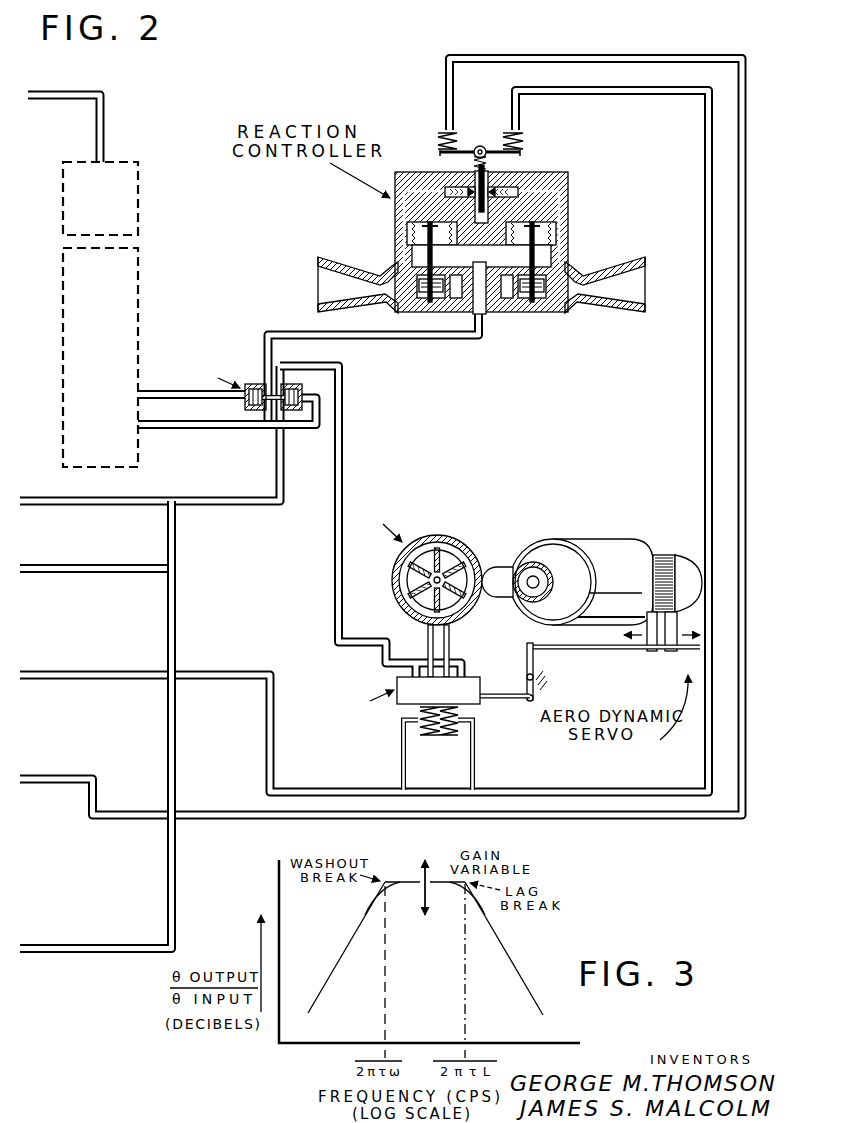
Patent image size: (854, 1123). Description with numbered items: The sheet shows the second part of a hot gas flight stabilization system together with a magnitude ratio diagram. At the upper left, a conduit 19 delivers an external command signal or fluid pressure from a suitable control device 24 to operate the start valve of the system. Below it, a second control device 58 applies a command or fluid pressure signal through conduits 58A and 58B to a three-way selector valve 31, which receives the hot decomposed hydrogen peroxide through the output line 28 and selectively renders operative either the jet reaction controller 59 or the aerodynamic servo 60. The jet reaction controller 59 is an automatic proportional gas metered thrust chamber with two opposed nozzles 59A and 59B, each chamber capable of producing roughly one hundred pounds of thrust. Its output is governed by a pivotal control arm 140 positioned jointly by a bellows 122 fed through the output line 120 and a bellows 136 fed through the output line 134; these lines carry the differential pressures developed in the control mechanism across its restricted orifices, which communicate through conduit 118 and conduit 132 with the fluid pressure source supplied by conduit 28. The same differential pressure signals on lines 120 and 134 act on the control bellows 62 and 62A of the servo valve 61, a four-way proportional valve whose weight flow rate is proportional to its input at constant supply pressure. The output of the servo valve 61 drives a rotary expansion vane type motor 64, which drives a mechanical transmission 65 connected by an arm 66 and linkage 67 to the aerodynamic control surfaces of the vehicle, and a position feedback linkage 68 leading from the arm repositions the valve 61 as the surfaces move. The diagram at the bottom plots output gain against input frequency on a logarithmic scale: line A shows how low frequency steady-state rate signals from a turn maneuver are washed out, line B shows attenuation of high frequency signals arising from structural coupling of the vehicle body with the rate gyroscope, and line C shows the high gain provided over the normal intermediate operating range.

In FIG. 2, the conduit 19 is at (58, 88).
In FIG. 2, the control device 24 is at (138, 210).
In FIG. 2, the control device 58 is at (138, 325).
In FIG. 2, the three-way selector valve 31 is at (255, 383).
In FIG. 2, the conduit 58A is at (175, 399).
In FIG. 2, the conduit 58B is at (205, 429).
In FIG. 2, the jet reaction controller 59 is at (575, 218).
In FIG. 2, the nozzle 59A is at (612, 262).
In FIG. 2, the nozzle 59B is at (352, 258).
In FIG. 2, the bellows 136 is at (436, 146).
In FIG. 2, the pivotal control arm 140 is at (466, 150).
In FIG. 2, the bellows 122 is at (526, 146).
In FIG. 2, the output line 134 is at (600, 56).
In FIG. 2, the output line 120 is at (704, 396).
In FIG. 2, the output line 28 is at (50, 506).
In FIG. 2, the conduit 118 is at (52, 574).
In FIG. 2, the conduit 132 is at (45, 955).
In FIG. 2, the rotary expansion vane type motor 64 is at (441, 537).
In FIG. 2, the aerodynamic servo 60 is at (502, 553).
In FIG. 2, the mechanical transmission 65 is at (593, 540).
In FIG. 2, the position feedback linkage 68 is at (560, 650).
In FIG. 2, the arm 66 is at (650, 652).
In FIG. 2, the linkage 67 is at (688, 652).
In FIG. 2, the servo valve 61 is at (484, 706).
In FIG. 2, the control bellows 62 is at (430, 736).
In FIG. 2, the control bellows 62A is at (450, 736).
In FIG. 3, the line A is at (346, 948).
In FIG. 3, the line B is at (507, 952).
In FIG. 3, the line C is at (412, 882).